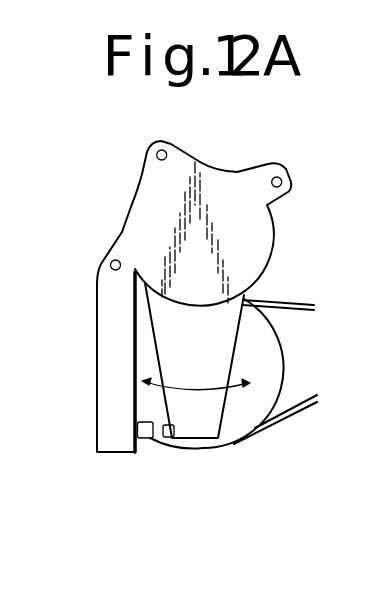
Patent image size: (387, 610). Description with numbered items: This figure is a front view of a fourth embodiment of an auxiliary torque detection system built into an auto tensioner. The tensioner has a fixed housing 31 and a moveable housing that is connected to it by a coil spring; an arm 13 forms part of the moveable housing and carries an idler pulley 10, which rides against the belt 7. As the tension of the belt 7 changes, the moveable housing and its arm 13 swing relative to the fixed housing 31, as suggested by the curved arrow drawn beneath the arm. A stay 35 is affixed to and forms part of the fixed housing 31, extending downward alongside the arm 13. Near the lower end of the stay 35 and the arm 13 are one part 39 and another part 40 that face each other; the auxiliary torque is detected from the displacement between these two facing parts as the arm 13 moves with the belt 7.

The fixed housing 31 is at (270, 235).
The stay 35 is at (107, 342).
The arm 13 is at (223, 365).
The idler pulley 10 is at (228, 428).
The belt 7 is at (295, 301).
The one part 39 is at (145, 438).
The another part 40 is at (167, 437).